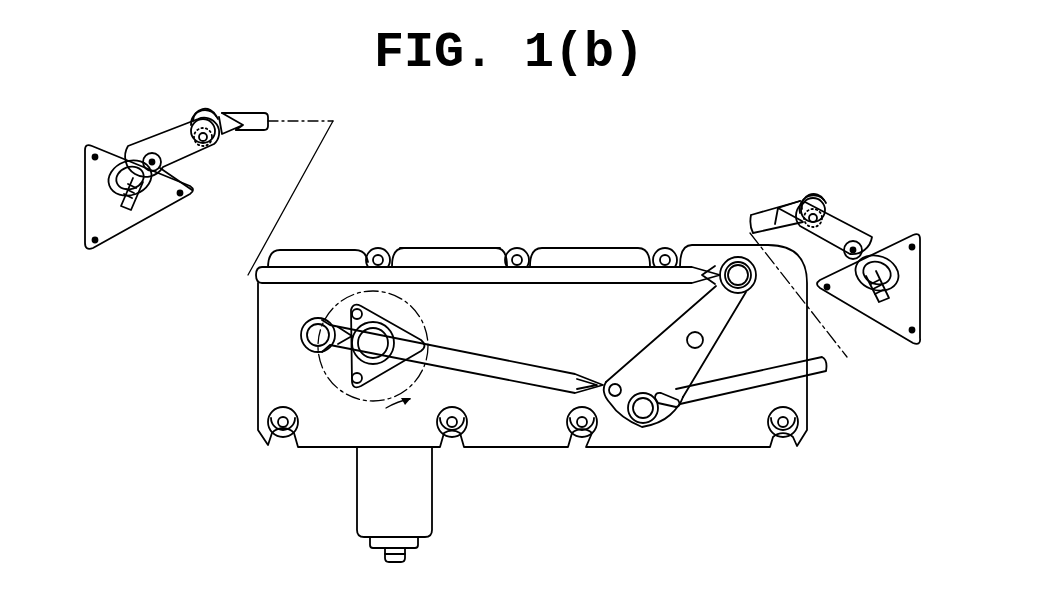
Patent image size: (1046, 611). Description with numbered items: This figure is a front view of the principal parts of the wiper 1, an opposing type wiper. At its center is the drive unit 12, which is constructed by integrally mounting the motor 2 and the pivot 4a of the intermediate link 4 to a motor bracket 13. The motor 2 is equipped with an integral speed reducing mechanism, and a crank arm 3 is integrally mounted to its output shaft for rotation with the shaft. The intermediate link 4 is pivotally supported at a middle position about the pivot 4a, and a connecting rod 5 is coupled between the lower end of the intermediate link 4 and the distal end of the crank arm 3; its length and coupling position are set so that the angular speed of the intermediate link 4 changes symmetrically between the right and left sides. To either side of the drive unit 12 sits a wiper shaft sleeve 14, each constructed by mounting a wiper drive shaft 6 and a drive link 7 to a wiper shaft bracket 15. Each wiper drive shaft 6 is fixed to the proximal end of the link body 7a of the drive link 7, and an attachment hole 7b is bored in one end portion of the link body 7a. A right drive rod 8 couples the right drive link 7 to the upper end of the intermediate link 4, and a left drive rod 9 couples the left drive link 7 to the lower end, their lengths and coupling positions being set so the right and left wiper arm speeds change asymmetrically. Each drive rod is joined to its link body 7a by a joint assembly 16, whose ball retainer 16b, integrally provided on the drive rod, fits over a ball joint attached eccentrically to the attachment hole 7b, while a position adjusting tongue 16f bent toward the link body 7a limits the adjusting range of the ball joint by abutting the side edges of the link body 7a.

The wiper 1 is at (531, 283).
The motor 2 is at (432, 492).
The crank arm 3 is at (343, 322).
The intermediate link 4 is at (617, 422).
The pivot 4a is at (695, 349).
The connecting rod 5 is at (535, 388).
The wiper drive shaft 6 is at (123, 207).
The drive link 7 is at (178, 124).
The link body 7a is at (186, 134).
The attachment hole 7b is at (208, 146).
The right drive rod 8 is at (435, 256).
The left drive rod 9 is at (745, 389).
The drive unit 12 is at (557, 232).
The motor bracket 13 is at (478, 253).
The wiper shaft sleeve 14 is at (497, 219).
The wiper shaft bracket 15 is at (155, 208).
The joint assembly 16 is at (790, 175).
The ball retainer 16b is at (208, 113).
The position adjusting tongue 16f is at (231, 122).